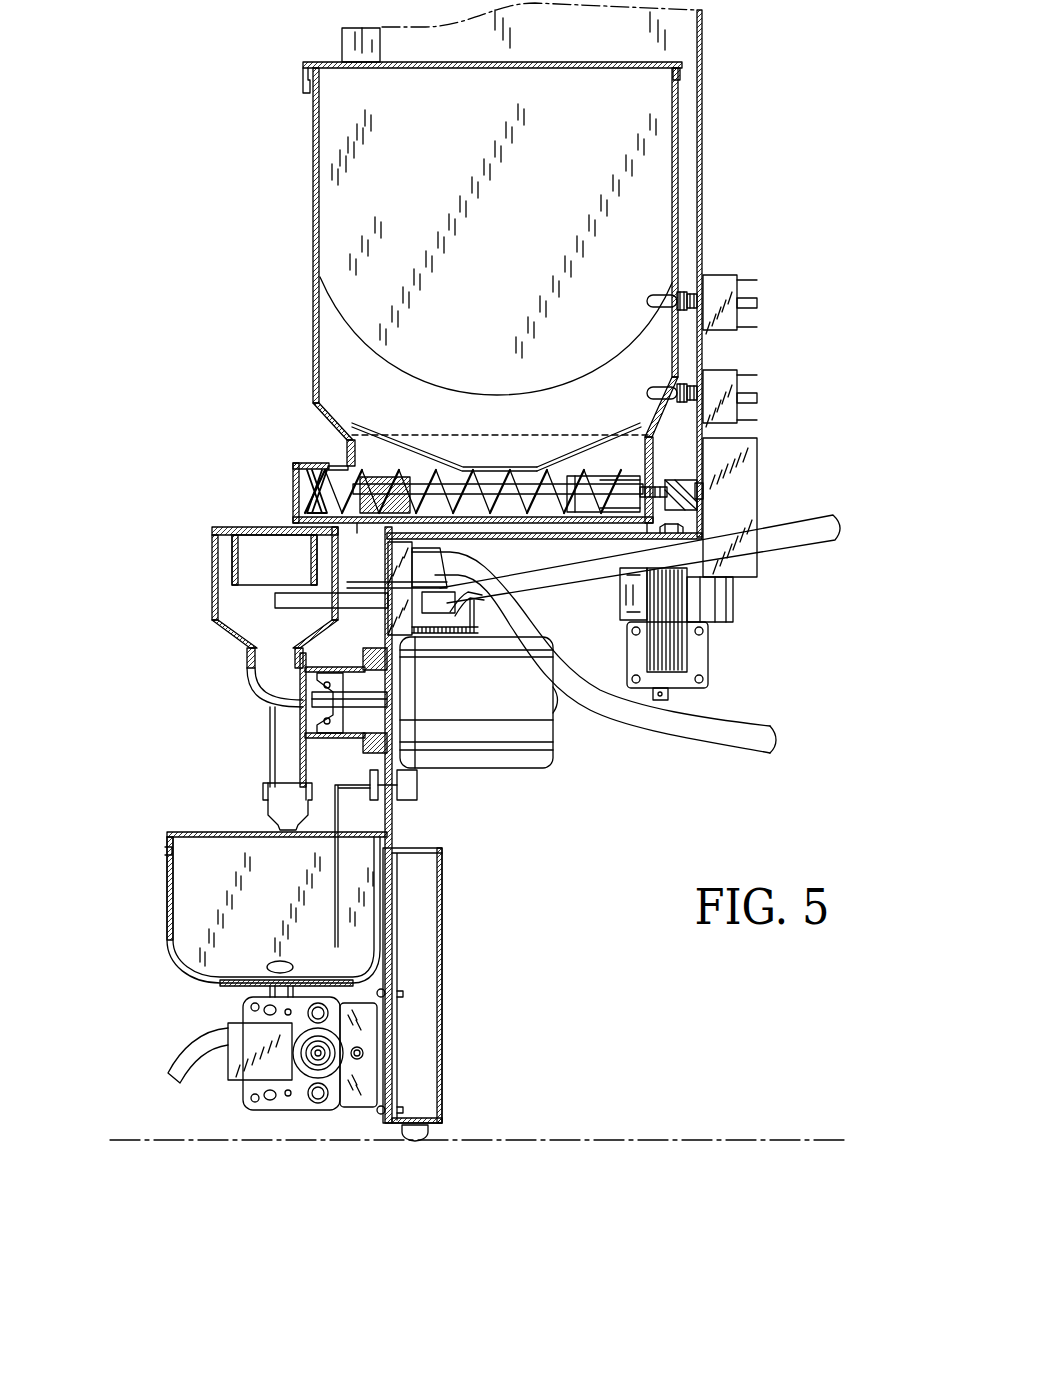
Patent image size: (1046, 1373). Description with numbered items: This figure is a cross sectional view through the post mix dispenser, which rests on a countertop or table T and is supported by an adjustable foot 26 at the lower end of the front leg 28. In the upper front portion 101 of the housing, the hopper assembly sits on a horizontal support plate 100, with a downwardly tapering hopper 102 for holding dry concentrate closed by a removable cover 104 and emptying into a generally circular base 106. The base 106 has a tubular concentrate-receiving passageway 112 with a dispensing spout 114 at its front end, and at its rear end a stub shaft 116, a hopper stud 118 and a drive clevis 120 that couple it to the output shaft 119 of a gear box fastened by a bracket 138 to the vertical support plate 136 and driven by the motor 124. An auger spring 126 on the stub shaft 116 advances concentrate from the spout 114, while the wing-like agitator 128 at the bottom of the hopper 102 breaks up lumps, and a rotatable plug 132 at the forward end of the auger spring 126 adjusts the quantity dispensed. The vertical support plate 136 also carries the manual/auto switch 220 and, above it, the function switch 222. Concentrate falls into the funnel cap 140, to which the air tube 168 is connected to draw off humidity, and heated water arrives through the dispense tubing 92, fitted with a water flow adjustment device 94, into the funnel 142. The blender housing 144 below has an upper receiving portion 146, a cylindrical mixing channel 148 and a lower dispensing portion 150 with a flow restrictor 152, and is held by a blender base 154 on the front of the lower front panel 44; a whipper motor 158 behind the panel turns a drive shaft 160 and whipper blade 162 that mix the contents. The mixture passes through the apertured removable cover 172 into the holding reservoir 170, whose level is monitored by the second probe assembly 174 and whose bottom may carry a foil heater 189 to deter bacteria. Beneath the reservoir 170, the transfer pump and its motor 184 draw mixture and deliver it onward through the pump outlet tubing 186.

The upper front portion 101 is at (350, 50).
The removable cover 104 is at (305, 83).
The hopper 102 is at (315, 252).
The vertical support plate 136 is at (702, 140).
The function switch 222 is at (715, 282).
The manual/auto switch 220 is at (713, 375).
The dry concentrate agitator 128 is at (378, 425).
The auger spring 126 is at (478, 460).
The base 106 is at (515, 450).
The stub shaft 116 is at (628, 460).
The drive clevis 120 is at (672, 480).
The concentrate-receiving passageway 112 is at (285, 462).
The rotatable plug 132 is at (318, 475).
The dispensing spout 114 is at (291, 497).
The bracket 138 is at (757, 443).
The output shaft 119 is at (703, 491).
The hopper stud 118 is at (677, 520).
The horizontal support plate 100 is at (590, 540).
The dispense tubing 92 is at (275, 600).
The funnel cap 140 is at (212, 551).
The air tube 168 is at (360, 565).
The funnel 142 is at (235, 633).
The upper dry concentrate and water receiving portion 146 is at (262, 678).
The blender housing 144 is at (303, 683).
The cylindrical mixing channel 148 is at (323, 717).
The whipper blade 162 is at (317, 720).
The blender base 154 is at (370, 753).
The lower dispensing portion 150 is at (280, 783).
The flow restrictor 152 is at (270, 812).
The drive shaft 160 is at (375, 700).
The water flow adjustment device 94 is at (473, 598).
The motor 124 is at (690, 685).
The whipper motor 158 is at (463, 768).
The lower front panel 44 is at (392, 825).
The second probe assembly 174 is at (365, 812).
The removable cover 172 is at (167, 840).
The holding reservoir 170 is at (185, 970).
The foil heater 189 is at (222, 987).
The pump outlet tubing 186 is at (205, 1065).
The motor 184 is at (293, 1103).
The front leg 28 is at (442, 993).
The adjustable feet 26 is at (417, 1141).
The table T is at (729, 1138).